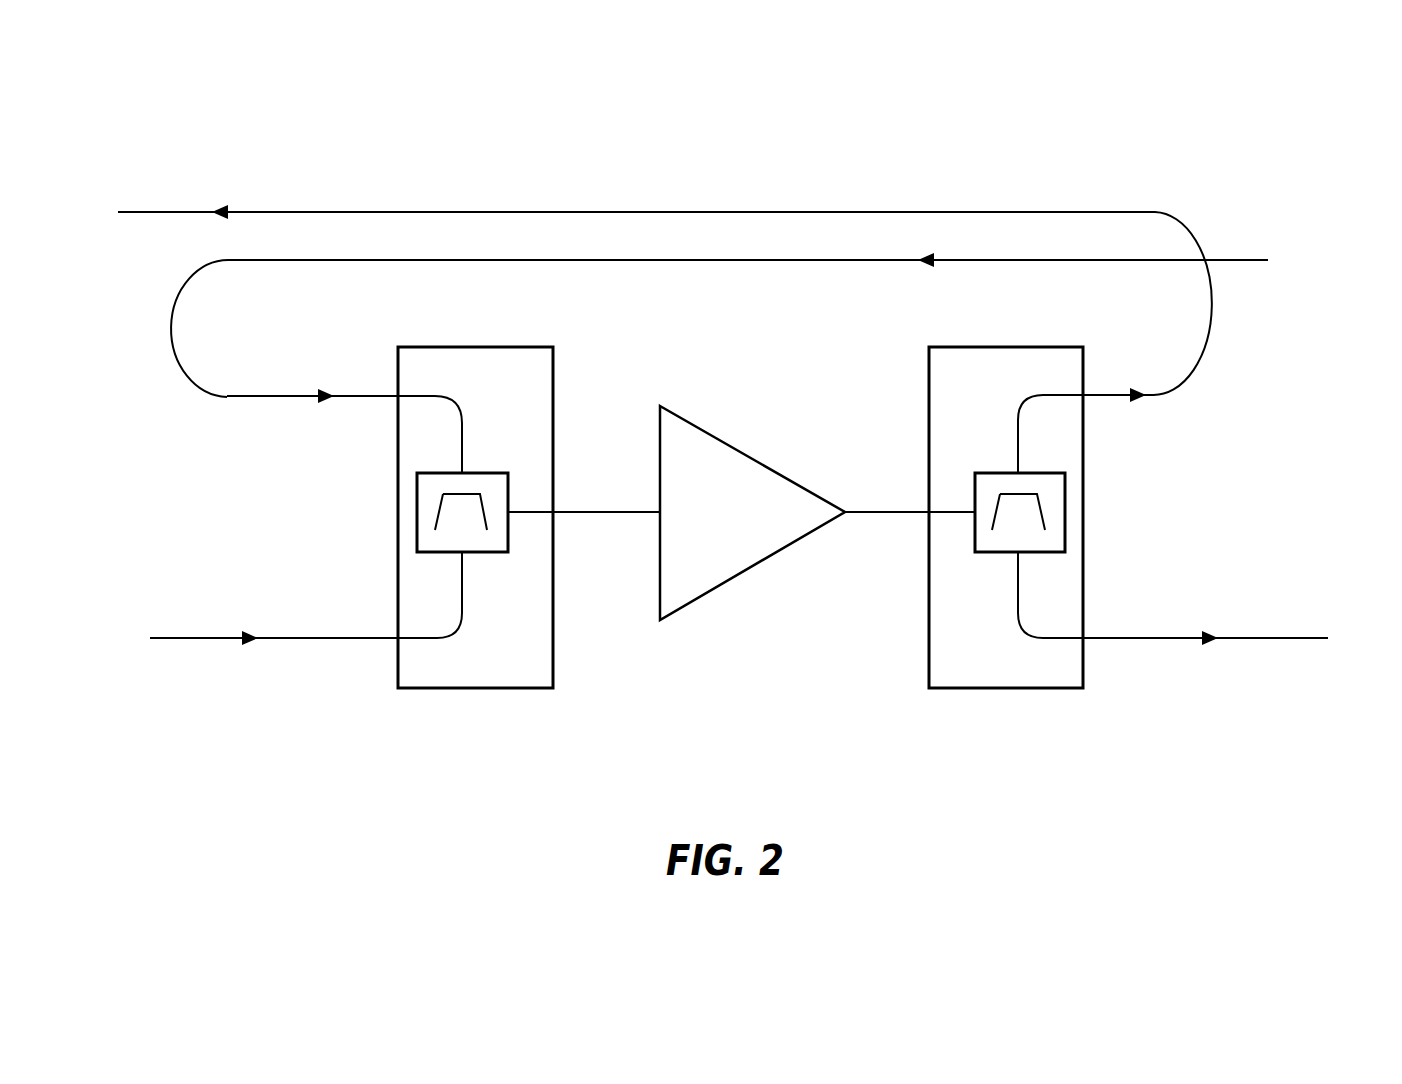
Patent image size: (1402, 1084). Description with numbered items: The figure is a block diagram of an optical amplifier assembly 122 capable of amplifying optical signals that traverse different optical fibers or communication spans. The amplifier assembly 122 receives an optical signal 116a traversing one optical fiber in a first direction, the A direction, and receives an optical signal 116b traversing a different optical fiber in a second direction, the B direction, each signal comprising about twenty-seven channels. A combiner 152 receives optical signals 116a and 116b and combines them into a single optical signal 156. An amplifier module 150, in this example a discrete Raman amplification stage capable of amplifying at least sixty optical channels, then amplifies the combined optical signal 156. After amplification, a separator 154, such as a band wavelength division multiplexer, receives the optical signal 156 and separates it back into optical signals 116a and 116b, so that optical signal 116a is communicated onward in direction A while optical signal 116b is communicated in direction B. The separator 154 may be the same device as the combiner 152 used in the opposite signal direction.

The optical amplifier assembly 122 is at (1190, 165).
The optical signal 116a is at (207, 640).
The optical signal 116b is at (272, 398).
The amplifier module 150 is at (742, 525).
The combiner 152 is at (533, 670).
The separator 154 is at (988, 670).
The optical signal 156 is at (607, 513).